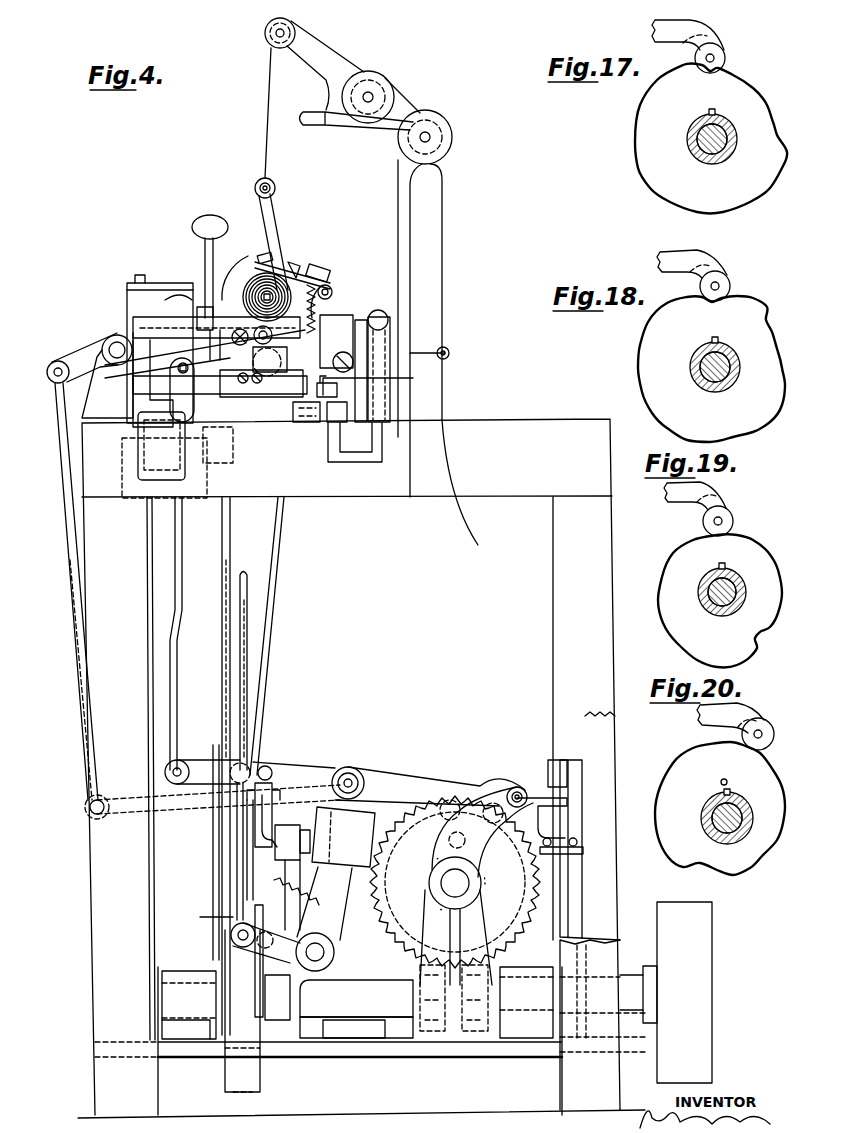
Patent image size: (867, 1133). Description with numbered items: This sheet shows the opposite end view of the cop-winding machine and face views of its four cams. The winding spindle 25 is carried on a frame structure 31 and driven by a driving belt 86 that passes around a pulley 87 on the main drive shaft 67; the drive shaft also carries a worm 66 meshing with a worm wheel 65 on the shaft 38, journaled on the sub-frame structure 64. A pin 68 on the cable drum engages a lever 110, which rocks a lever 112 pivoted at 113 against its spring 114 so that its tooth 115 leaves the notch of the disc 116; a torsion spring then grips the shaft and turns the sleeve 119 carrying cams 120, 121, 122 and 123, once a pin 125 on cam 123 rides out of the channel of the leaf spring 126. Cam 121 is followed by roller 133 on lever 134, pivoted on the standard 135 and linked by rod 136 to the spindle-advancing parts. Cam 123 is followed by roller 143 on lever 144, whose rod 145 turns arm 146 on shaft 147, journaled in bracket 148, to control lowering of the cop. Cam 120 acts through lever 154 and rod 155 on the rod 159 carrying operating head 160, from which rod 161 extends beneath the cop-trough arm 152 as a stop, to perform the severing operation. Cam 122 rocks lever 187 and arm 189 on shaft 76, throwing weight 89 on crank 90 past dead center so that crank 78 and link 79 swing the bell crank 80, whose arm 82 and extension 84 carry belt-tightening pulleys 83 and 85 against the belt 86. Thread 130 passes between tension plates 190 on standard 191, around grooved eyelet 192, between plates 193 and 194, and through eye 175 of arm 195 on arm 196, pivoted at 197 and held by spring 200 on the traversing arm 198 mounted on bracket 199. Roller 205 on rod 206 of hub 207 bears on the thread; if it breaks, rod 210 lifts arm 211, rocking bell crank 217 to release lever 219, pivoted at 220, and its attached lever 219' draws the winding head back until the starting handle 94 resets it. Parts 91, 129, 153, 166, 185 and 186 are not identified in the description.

In FIG. 4, the winding spindle 25 is at (253, 282).
In FIG. 4, the frame structure 31 is at (110, 500).
In FIG. 4, the shaft 38 is at (457, 883).
In FIG. 17, the shaft 38 is at (735, 140).
In FIG. 18, the shaft 38 is at (738, 370).
In FIG. 19, the shaft 38 is at (742, 594).
In FIG. 20, the shaft 38 is at (740, 812).
In FIG. 4, the sub-frame structure 64 is at (490, 1047).
In FIG. 4, the worm wheel 65 is at (455, 882).
In FIG. 4, the worm 66 is at (420, 998).
In FIG. 4, the main drive shaft 67 is at (632, 970).
In FIG. 4, the pin 68 is at (464, 886).
In FIG. 4, the shaft 76 is at (324, 960).
In FIG. 4, the crank 78 is at (272, 962).
In FIG. 4, the link 79 is at (237, 883).
In FIG. 4, the bell crank 80 is at (265, 827).
In FIG. 4, the arm 82 is at (264, 777).
In FIG. 4, the belt tightening pulley 83 is at (255, 752).
In FIG. 4, the extension 84 is at (280, 902).
In FIG. 4, the belt tightening pulley 85 is at (212, 850).
In FIG. 4, the driving belt 86 is at (263, 608).
In FIG. 4, the pulley 87 is at (224, 1077).
In FIG. 4, the weight 89 is at (353, 817).
In FIG. 4, the crank 90 is at (334, 938).
In FIG. 4, the rod 91 is at (226, 624).
In FIG. 4, the starting handle 94 is at (195, 242).
In FIG. 4, the lever 110 is at (468, 834).
In FIG. 4, the lever 112 is at (545, 782).
In FIG. 4, the pivot 113 is at (508, 787).
In FIG. 4, the spring 114 is at (542, 818).
In FIG. 4, the tooth 115 is at (448, 799).
In FIG. 4, the disc 116 is at (400, 830).
In FIG. 17, the sleeve 119 is at (698, 140).
In FIG. 18, the sleeve 119 is at (700, 366).
In FIG. 19, the sleeve 119 is at (708, 597).
In FIG. 20, the sleeve 119 is at (712, 818).
In FIG. 17, the cam 120 is at (637, 140).
In FIG. 18, the cam 121 is at (643, 362).
In FIG. 19, the cam 122 is at (660, 572).
In FIG. 20, the cam 123 is at (676, 768).
In FIG. 4, the pin 125 is at (437, 856).
In FIG. 20, the pin 125 is at (728, 781).
In FIG. 4, the leaf spring 126 is at (574, 842).
In FIG. 4, the lever 129 is at (291, 262).
In FIG. 4, the thread 130 is at (455, 470).
In FIG. 18, the roller 133 is at (728, 282).
In FIG. 18, the lever 134 is at (670, 253).
In FIG. 4, the standard 135 is at (356, 767).
In FIG. 4, the rod 136 is at (247, 588).
In FIG. 20, the roller 143 is at (775, 732).
In FIG. 4, the lever 144 is at (182, 806).
In FIG. 20, the lever 144 is at (748, 710).
In FIG. 4, the rod 145 is at (65, 518).
In FIG. 4, the arm 146 is at (82, 357).
In FIG. 4, the shaft 147 is at (117, 336).
In FIG. 4, the bracket 148 is at (92, 395).
In FIG. 4, the arm 152 is at (132, 366).
In FIG. 4, the slide 153 is at (230, 296).
In FIG. 4, the lever 154 is at (197, 757).
In FIG. 17, the lever 154 is at (698, 28).
In FIG. 4, the rod 155 is at (178, 578).
In FIG. 4, the rod 159 is at (220, 380).
In FIG. 4, the operating head 160 is at (261, 370).
In FIG. 4, the rod 161 is at (135, 407).
In FIG. 4, the housing 166 is at (226, 468).
In FIG. 4, the eye 175 is at (263, 255).
In FIG. 4, the spring 185 is at (186, 324).
In FIG. 4, the bracket 186 is at (169, 311).
In FIG. 19, the lever 187 is at (683, 502).
In FIG. 4, the arm 189 is at (450, 353).
In FIG. 4, the tension plates 190 is at (448, 126).
In FIG. 4, the standard 191 is at (411, 238).
In FIG. 4, the grooved eyelet 192 is at (303, 127).
In FIG. 4, the tension plate 193 is at (385, 78).
In FIG. 4, the tension plate 194 is at (290, 28).
In FIG. 4, the arm 195 is at (301, 266).
In FIG. 4, the arm 196 is at (329, 270).
In FIG. 4, the pivot 197 is at (334, 293).
In FIG. 4, the traversing arm 198 is at (336, 348).
In FIG. 4, the bracket 199 is at (330, 447).
In FIG. 4, the spring 200 is at (331, 286).
In FIG. 4, the roller 205 is at (262, 186).
In FIG. 4, the rod 206 is at (284, 216).
In FIG. 4, the hub 207 is at (304, 412).
In FIG. 4, the rod 210 is at (333, 388).
In FIG. 4, the arm 211 is at (382, 383).
In FIG. 4, the bell crank 217 is at (376, 314).
In FIG. 4, the lever 219 is at (332, 326).
In FIG. 4, the lever 219' is at (258, 338).
In FIG. 4, the pivot 220 is at (138, 275).